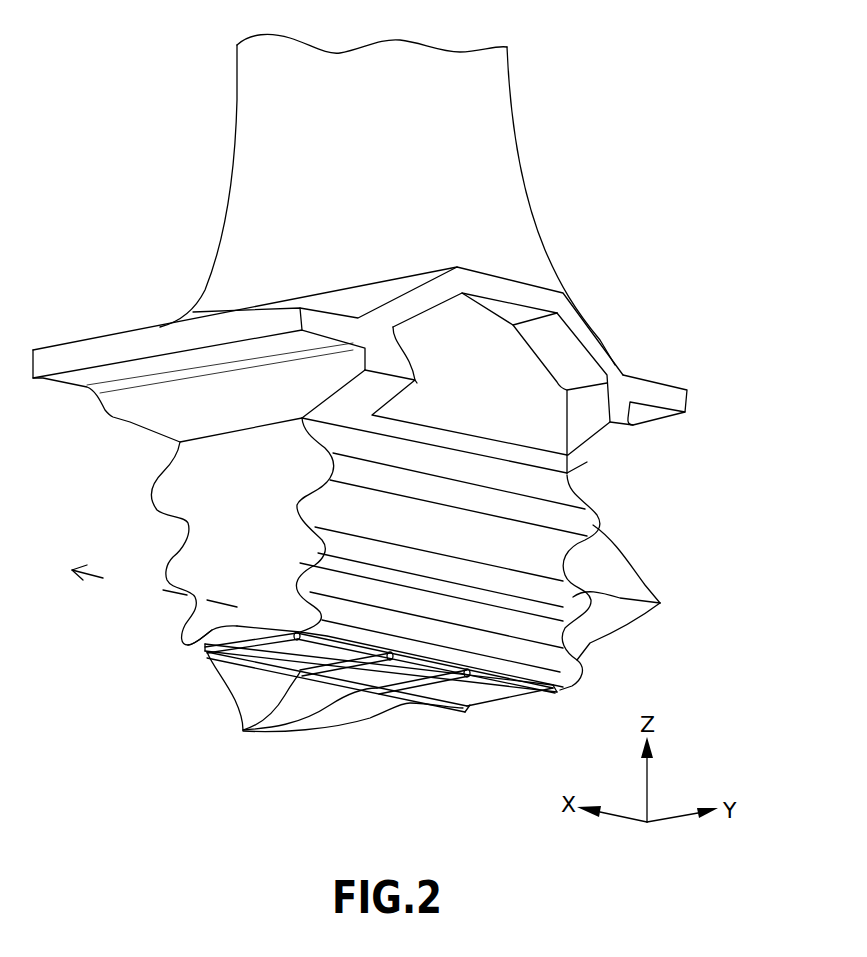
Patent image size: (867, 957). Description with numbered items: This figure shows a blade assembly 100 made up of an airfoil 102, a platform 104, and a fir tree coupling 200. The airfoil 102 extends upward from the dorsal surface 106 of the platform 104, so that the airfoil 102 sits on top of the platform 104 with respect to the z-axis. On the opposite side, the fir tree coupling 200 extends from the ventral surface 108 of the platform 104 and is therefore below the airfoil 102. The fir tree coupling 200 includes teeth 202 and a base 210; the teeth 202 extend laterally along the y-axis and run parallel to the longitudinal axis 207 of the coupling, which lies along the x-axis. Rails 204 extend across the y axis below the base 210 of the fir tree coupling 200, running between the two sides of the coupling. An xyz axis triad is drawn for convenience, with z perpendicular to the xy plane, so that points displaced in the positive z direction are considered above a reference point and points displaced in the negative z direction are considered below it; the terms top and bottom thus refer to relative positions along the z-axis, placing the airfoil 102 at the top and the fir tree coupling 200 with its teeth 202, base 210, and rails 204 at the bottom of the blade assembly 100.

The blade assembly 100 is at (628, 94).
The airfoil 102 is at (507, 200).
The platform 104 is at (560, 382).
The dorsal surface 106 is at (594, 322).
The ventral surface 108 is at (577, 450).
The fir tree coupling 200 is at (260, 561).
The teeth 202 is at (660, 603).
The rails 204 is at (377, 690).
The longitudinal axis 207 is at (147, 588).
The base 210 is at (192, 638).